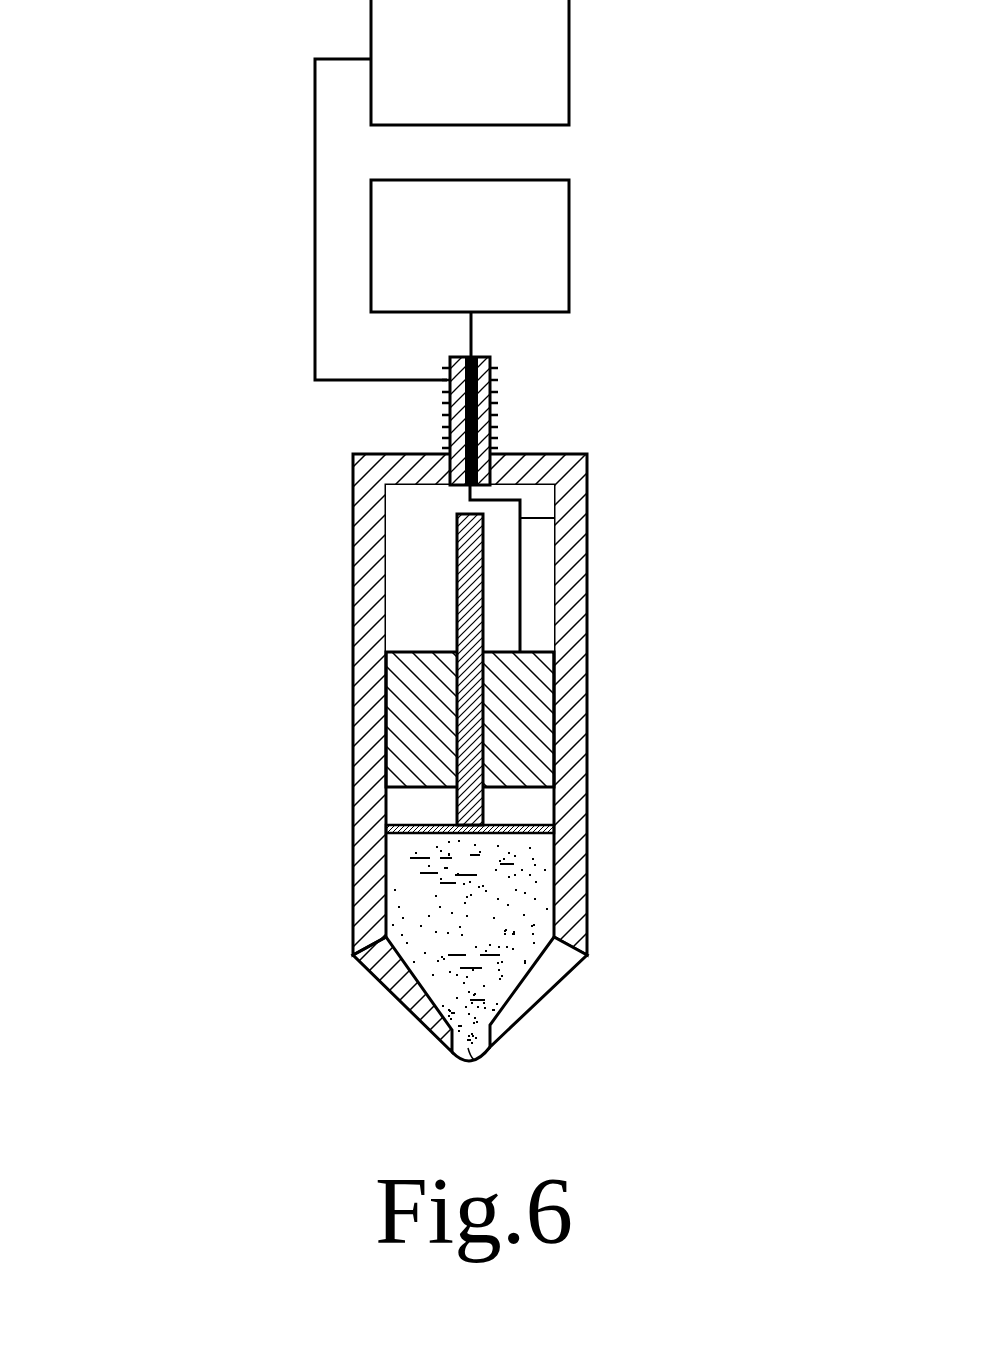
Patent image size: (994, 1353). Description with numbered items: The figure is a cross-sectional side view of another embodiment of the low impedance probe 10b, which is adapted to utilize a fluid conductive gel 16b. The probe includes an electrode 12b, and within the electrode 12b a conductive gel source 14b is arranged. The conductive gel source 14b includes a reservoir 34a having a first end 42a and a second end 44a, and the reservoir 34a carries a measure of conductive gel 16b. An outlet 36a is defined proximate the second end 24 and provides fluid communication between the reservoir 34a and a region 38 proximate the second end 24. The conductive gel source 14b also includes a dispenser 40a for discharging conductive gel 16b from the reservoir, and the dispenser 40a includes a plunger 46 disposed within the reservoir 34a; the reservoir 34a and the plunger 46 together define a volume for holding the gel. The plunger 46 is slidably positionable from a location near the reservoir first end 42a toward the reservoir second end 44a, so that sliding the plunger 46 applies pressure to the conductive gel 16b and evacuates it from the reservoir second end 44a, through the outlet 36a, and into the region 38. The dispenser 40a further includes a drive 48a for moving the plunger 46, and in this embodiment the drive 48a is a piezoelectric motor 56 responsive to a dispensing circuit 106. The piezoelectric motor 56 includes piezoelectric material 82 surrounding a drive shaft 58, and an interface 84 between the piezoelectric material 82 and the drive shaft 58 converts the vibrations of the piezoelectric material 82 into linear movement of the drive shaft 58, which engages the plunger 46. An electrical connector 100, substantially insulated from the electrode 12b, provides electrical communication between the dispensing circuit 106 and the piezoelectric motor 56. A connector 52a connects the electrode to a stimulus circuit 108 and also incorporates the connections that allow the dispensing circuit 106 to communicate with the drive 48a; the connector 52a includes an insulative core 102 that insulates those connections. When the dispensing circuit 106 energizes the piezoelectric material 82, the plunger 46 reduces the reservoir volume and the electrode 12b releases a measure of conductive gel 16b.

The low impedance probe 10b is at (181, 447).
The stimulus circuit 108 is at (569, 57).
The dispensing circuit 106 is at (569, 245).
The connector 52a is at (447, 402).
The insulative core 102 is at (490, 428).
The electrical connector 100 is at (556, 518).
The dispenser 40a is at (439, 545).
The drive shaft 58 is at (483, 527).
The piezoelectric material 82 is at (423, 652).
The conductive gel source 14b is at (547, 623).
The piezoelectric motor 56 is at (530, 652).
The interface 84 is at (453, 718).
The drive 48a is at (555, 700).
The plunger 46 is at (413, 823).
The electrode 12b is at (587, 797).
The reservoir first end 42a is at (385, 843).
The reservoir 34a is at (555, 850).
The reservoir second end 44a is at (415, 1017).
The conductive gel 16b is at (503, 963).
The second end 24 is at (527, 1017).
The outlet 36a is at (470, 1052).
The region 38 is at (412, 1096).